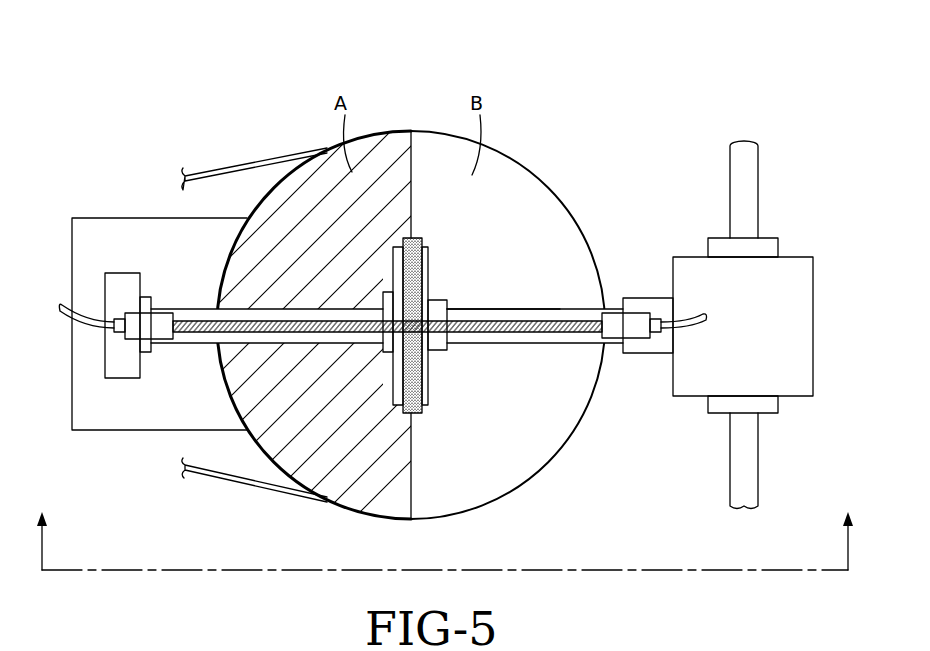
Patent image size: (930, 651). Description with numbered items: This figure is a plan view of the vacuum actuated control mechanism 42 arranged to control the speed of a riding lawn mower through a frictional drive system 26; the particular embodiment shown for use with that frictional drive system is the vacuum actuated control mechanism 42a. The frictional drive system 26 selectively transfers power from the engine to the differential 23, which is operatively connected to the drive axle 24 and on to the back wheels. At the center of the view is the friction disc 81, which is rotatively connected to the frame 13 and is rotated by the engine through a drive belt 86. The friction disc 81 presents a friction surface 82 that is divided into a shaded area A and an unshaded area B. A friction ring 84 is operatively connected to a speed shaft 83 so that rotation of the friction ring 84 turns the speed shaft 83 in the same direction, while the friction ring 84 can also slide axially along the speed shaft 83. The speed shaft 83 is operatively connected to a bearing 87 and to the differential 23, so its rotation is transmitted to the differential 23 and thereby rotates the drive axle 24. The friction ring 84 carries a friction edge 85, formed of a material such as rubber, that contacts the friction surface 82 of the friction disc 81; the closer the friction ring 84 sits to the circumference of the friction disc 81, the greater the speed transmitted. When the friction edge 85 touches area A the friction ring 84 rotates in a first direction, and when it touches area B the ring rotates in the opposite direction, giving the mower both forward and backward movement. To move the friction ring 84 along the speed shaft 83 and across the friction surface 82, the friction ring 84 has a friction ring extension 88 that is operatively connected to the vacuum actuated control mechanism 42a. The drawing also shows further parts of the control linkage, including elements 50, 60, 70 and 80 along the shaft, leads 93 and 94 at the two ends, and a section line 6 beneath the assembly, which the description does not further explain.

The frame 13 is at (106, 218).
The differential 23 is at (815, 320).
The drive axle 24 is at (752, 195).
The frictional drive system 26 is at (658, 142).
The vacuum actuated control mechanism 42 is at (246, 88).
The vacuum actuated control mechanism 42a is at (720, 90).
The coupling block 50 is at (160, 328).
The coupling block 60 is at (633, 325).
The threaded shaft 70 is at (203, 322).
The shaft sleeve 80 is at (505, 322).
The friction disc 81 is at (535, 190).
The friction surface 82 is at (331, 238).
The speed shaft 83 is at (562, 311).
The friction ring 84 is at (428, 380).
The friction edge 85 is at (414, 240).
The drive belt 86 is at (266, 160).
The bearing 87 is at (132, 284).
The friction ring extension 88 is at (385, 352).
The lead wire 93 is at (60, 312).
The lead wire 94 is at (692, 330).
The section line 6 is at (444, 527).